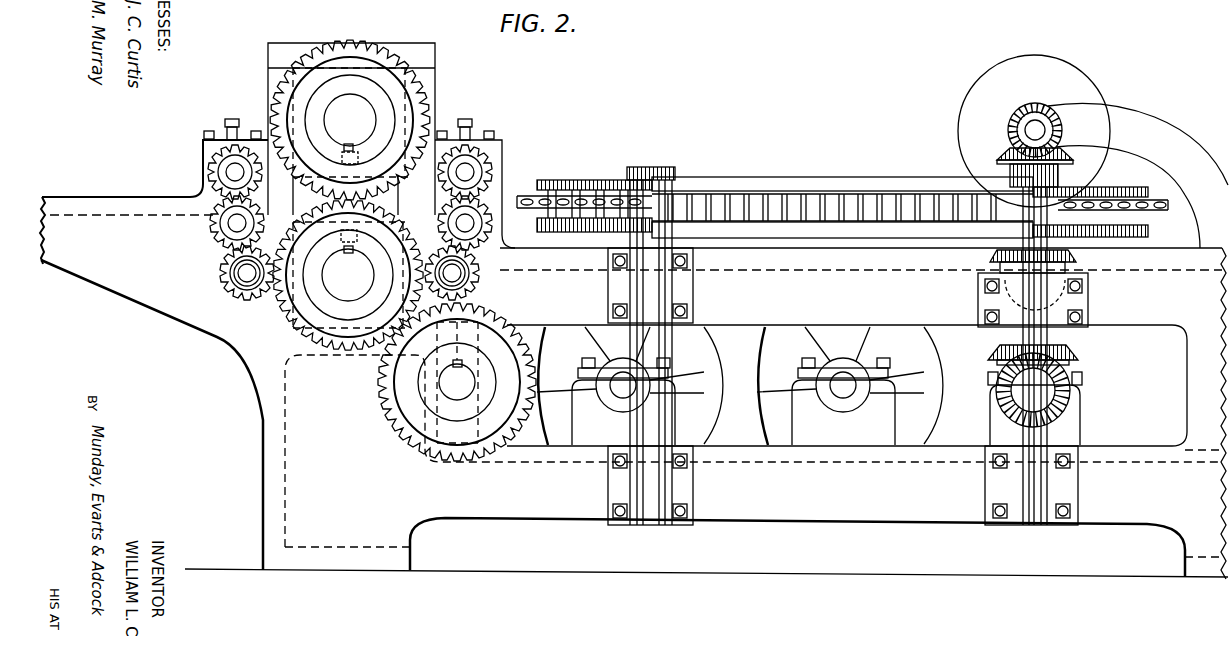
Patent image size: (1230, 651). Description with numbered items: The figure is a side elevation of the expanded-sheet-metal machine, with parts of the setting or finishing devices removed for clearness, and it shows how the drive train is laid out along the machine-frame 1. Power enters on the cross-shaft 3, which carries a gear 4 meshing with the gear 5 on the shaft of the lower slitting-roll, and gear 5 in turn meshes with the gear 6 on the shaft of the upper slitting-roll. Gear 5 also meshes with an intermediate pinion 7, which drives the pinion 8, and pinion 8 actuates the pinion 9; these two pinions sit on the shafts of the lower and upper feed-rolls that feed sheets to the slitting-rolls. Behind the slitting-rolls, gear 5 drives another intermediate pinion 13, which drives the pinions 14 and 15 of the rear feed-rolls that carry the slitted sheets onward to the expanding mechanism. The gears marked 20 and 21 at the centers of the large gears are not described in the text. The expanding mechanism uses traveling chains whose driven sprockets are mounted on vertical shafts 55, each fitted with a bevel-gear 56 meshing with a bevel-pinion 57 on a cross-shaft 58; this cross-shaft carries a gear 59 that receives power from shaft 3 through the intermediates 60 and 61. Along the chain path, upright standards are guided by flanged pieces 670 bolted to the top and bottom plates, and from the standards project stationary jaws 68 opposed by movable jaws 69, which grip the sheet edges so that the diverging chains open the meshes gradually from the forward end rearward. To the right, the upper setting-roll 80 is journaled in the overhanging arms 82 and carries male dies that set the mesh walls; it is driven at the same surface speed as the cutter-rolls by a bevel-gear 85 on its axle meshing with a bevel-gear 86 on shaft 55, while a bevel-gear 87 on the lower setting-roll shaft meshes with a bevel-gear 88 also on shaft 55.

The machine-frame 1 is at (634, 311).
The cross-shaft 3 is at (457, 380).
The gear 4 is at (400, 415).
The gear 5 is at (340, 348).
The gear 6 is at (420, 100).
The intermediate pinion 7 is at (246, 299).
The pinion 8 is at (213, 233).
The pinion 9 is at (208, 176).
The intermediate pinion 13 is at (480, 288).
The pinion 14 is at (492, 228).
The pinion 15 is at (490, 166).
The shaft 20 is at (350, 122).
The shaft 21 is at (348, 273).
The shaft 55 is at (1045, 437).
The bevel-gear 56 is at (1068, 356).
The bevel-pinion 57 is at (1070, 404).
The cross-shaft 58 is at (1023, 392).
The gear 59 is at (1108, 413).
The intermediate 60 is at (942, 350).
The intermediate 61 is at (720, 358).
The stationary jaw 68 is at (573, 202).
The movable jaw 69 is at (590, 202).
The flanged pieces 670 is at (842, 207).
The setting-roll 80 is at (1034, 131).
The overhanging arms 82 is at (1122, 175).
The bevel-gear 85 is at (1015, 110).
The bevel-gear 86 is at (1007, 154).
The bevel-gear 87 is at (1070, 256).
The bevel-gear 88 is at (1085, 281).